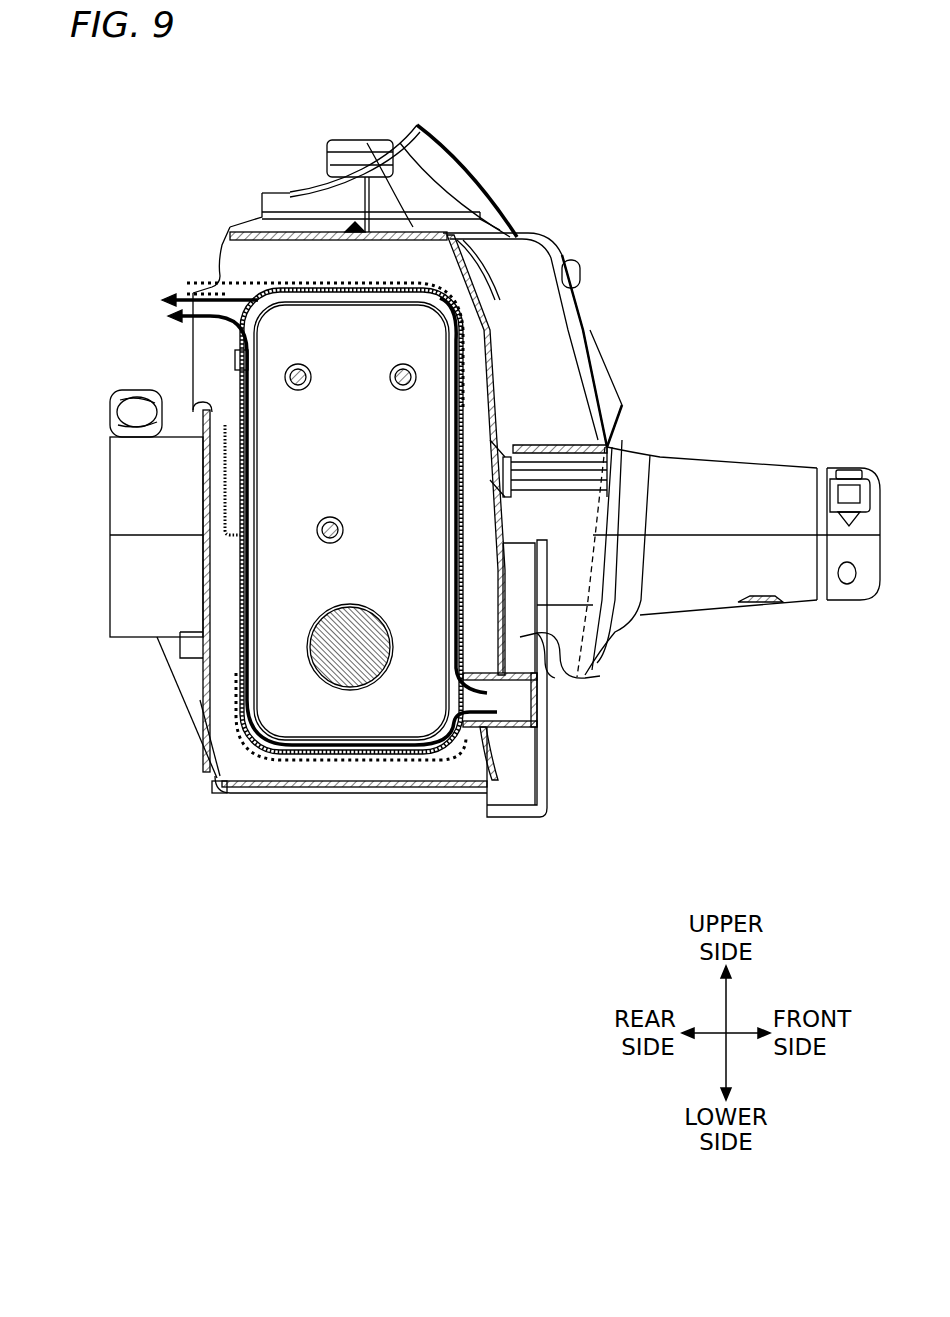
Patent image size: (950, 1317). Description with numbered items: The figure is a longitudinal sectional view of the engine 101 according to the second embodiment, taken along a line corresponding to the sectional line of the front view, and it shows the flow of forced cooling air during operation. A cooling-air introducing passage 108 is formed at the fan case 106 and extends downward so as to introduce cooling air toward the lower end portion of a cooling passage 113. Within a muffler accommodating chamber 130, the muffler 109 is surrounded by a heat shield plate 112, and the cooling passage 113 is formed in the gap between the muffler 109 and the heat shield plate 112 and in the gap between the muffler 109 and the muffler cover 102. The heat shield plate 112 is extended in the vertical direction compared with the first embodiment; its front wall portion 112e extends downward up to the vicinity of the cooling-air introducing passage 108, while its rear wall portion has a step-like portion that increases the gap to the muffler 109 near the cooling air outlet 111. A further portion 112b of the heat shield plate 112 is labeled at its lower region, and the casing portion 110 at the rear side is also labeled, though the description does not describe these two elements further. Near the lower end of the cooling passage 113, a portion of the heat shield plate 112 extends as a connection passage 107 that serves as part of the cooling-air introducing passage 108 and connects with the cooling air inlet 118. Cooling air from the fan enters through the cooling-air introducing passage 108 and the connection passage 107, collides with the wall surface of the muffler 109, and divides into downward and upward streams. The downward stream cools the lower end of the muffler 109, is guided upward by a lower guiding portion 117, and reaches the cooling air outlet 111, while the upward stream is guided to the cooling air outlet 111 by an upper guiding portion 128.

The engine 101 is at (742, 188).
The muffler cover 102 is at (413, 210).
The fan case 106 is at (603, 655).
The connection passage 107 is at (490, 733).
The cooling-air introducing passage 108 is at (520, 637).
The muffler 109 is at (443, 477).
The rear cover 110 is at (217, 350).
The cooling air outlet 111 is at (193, 383).
The heat shield plate 112 is at (240, 571).
The bottom wall of air cleaner case 112b is at (288, 760).
The front wall portion 112e is at (470, 521).
The cooling passage 113 is at (248, 643).
The lower guiding portion 117 is at (240, 752).
The cooling air inlet 118 is at (520, 703).
The upper guiding portion 128 is at (527, 363).
The muffler accommodating chamber 130 is at (430, 277).